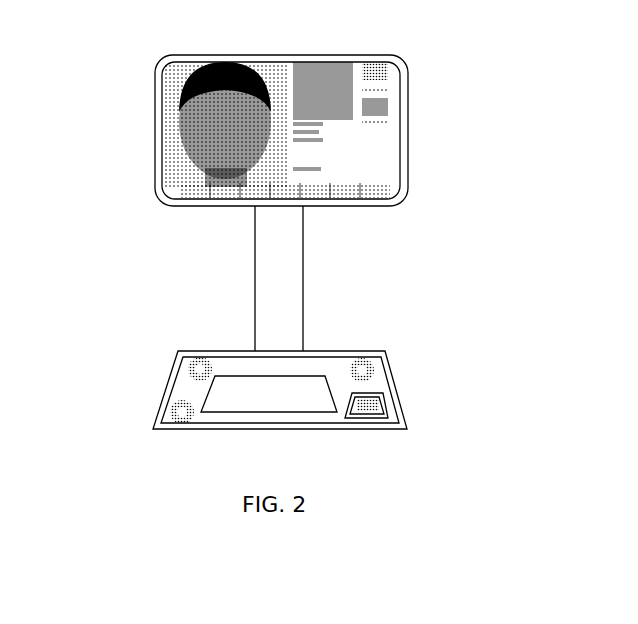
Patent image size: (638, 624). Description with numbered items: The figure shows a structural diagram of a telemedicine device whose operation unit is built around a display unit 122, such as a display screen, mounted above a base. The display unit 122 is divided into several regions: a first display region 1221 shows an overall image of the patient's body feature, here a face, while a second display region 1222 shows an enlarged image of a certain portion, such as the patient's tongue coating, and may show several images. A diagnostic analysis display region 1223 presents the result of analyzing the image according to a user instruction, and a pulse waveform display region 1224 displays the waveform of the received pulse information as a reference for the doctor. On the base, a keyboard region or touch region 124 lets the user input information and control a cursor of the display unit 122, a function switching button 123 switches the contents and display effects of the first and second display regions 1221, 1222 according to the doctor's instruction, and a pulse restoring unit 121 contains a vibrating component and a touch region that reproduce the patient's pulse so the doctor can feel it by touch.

The display unit 122 is at (148, 80).
The first display region 1221 is at (167, 118).
The second display region 1222 is at (378, 100).
The diagnostic analysis display region 1223 is at (373, 157).
The pulse waveform display region 1224 is at (358, 197).
The keyboard region or touch region 124 is at (255, 391).
The function switching button 123 is at (367, 363).
The pulse restoring unit 121 is at (373, 400).